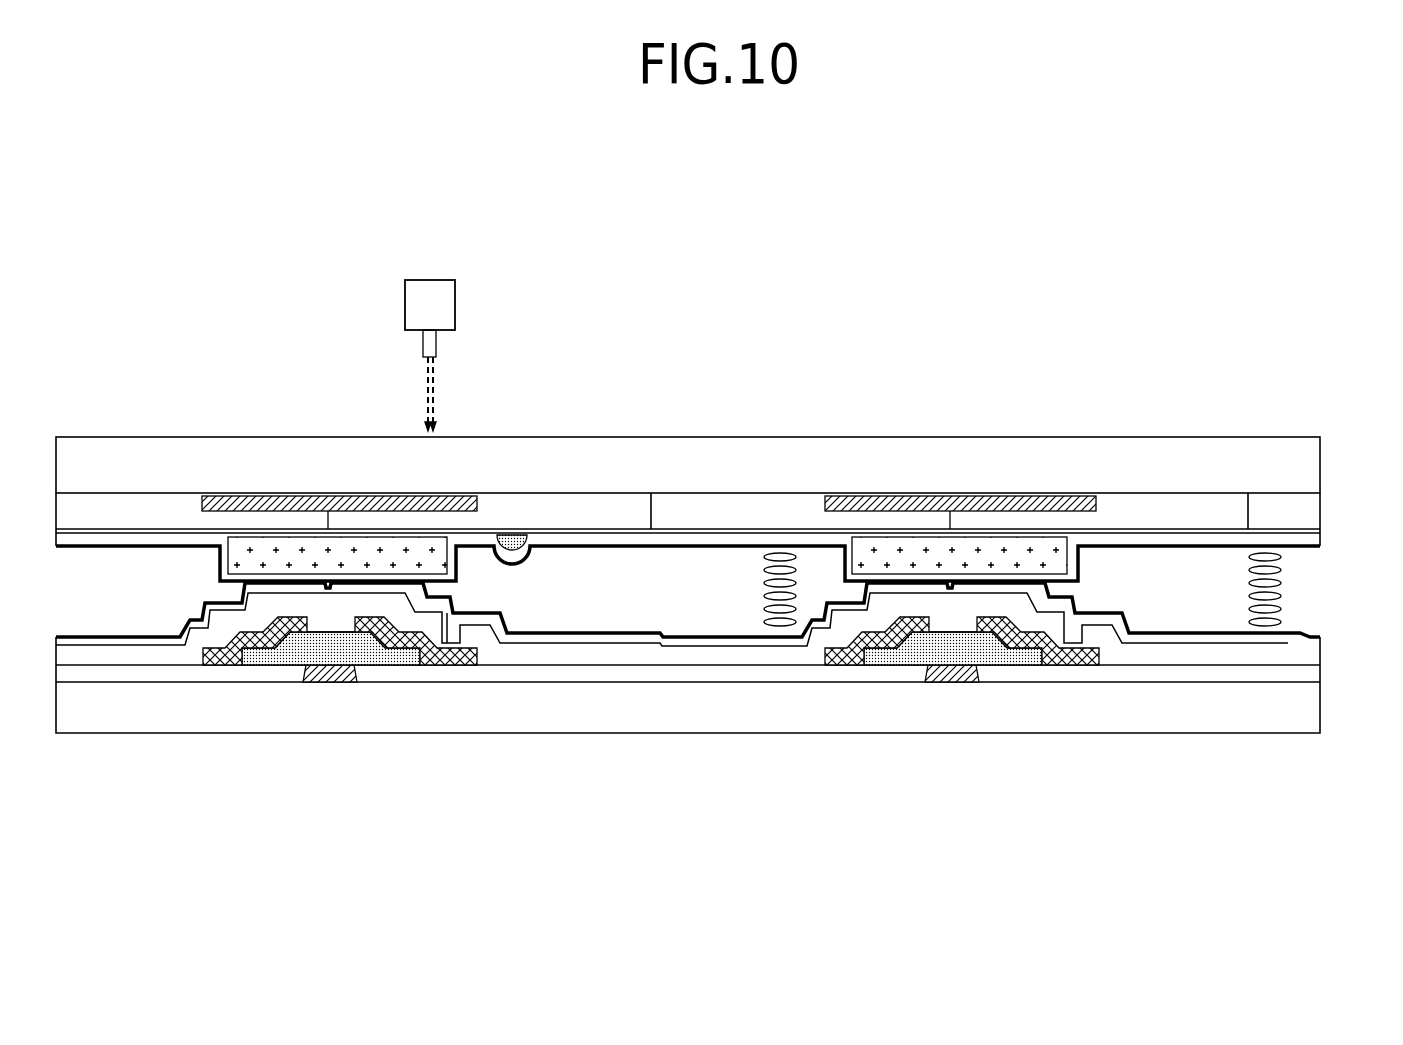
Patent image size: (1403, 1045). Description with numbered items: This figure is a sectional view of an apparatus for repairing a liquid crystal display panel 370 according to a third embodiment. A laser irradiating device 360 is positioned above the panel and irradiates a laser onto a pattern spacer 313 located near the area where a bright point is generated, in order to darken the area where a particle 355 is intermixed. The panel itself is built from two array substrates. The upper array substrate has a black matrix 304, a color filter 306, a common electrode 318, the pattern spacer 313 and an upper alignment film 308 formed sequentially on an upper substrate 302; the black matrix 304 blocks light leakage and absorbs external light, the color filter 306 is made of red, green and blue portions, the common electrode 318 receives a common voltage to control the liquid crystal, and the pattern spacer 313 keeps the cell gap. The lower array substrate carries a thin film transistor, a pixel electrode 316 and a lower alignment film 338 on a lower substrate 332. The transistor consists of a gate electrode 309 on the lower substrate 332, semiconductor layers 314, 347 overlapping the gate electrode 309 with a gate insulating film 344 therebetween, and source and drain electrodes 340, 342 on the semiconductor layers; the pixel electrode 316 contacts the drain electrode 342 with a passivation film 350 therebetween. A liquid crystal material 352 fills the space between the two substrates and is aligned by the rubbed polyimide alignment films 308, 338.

The upper substrate 302 is at (1312, 458).
The black matrix 304 is at (898, 508).
The color filter 306 is at (1312, 508).
The upper alignment film 308 is at (1318, 547).
The gate electrode 309 is at (328, 684).
The pattern spacer 313 is at (966, 545).
The semiconductor layer 314 is at (253, 654).
The pixel electrode 316 is at (500, 648).
The common electrode 318 is at (1312, 534).
The lower substrate 332 is at (1312, 707).
The lower alignment film 338 is at (1312, 637).
The source electrode 340 is at (290, 624).
The drain electrode 342 is at (431, 654).
The gate insulating film 344 is at (658, 676).
The semiconductor layer 347 is at (381, 650).
The passivation film 350 is at (561, 654).
The liquid crystal material 352 is at (1250, 568).
The particle 355 is at (526, 552).
The laser irradiating device 360 is at (455, 305).
The liquid crystal display panel 370 is at (1176, 382).